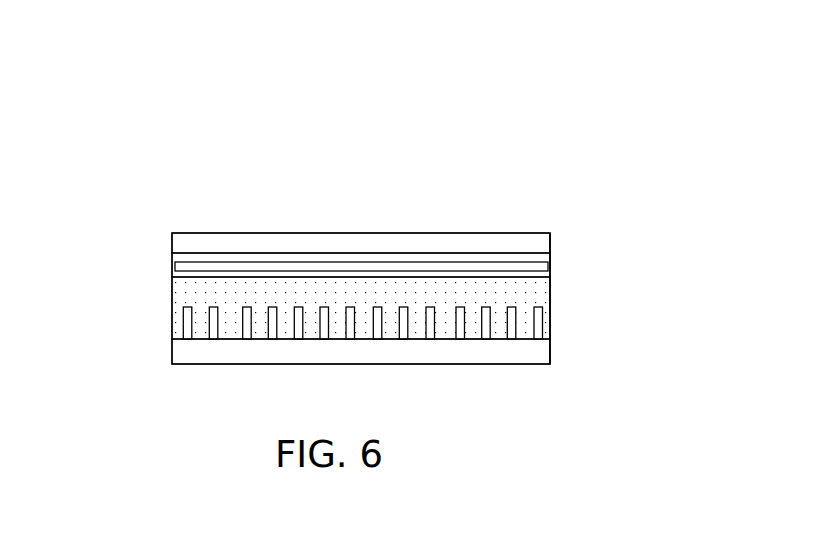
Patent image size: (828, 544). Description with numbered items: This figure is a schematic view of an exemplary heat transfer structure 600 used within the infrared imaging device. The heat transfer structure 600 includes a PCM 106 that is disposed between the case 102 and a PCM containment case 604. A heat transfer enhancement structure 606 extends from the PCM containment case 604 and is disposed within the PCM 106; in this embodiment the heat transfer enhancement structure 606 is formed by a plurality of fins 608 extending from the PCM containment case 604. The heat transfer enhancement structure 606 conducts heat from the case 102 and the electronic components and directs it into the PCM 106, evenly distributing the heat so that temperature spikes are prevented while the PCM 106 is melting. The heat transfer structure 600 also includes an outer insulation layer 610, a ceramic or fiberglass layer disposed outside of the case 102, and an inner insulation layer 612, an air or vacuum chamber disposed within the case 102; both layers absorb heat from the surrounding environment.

The heat transfer structure 600 is at (570, 90).
The outer insulation layer 610 is at (358, 233).
The case 102 is at (513, 258).
The inner insulation layer 612 is at (435, 267).
The heat transfer enhancement structure 606 is at (306, 294).
The fins 608 is at (182, 323).
The PCM containment case 604 is at (183, 350).
The PCM 106 is at (547, 303).